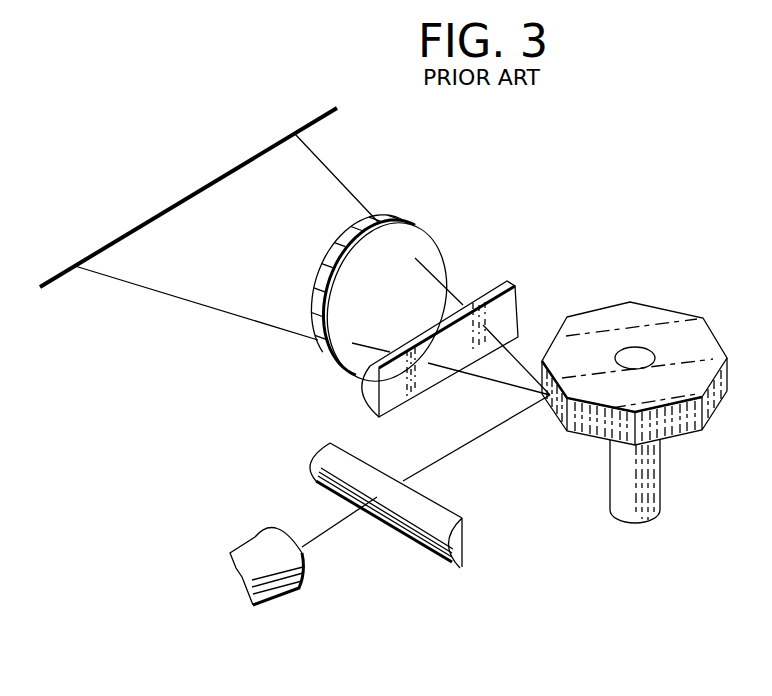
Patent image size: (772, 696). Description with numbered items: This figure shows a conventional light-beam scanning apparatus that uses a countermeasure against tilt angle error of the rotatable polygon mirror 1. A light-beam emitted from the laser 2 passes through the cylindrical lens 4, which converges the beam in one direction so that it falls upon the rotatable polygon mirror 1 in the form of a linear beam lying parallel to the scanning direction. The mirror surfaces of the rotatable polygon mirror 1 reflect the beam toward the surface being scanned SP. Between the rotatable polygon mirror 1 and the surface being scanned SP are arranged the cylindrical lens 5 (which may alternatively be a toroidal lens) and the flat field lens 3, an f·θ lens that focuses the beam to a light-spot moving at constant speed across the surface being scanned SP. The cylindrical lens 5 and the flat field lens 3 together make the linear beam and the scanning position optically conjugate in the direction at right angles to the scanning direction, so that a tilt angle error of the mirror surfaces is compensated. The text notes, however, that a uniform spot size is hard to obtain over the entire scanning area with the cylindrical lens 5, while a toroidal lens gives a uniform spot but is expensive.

The surface being scanned SP is at (203, 188).
The rotatable polygon mirror 1 is at (653, 317).
The laser 2 is at (257, 543).
The flat field lens 3 is at (422, 238).
The cylindrical lens 4 is at (455, 538).
The cylindrical lens 5 is at (507, 295).